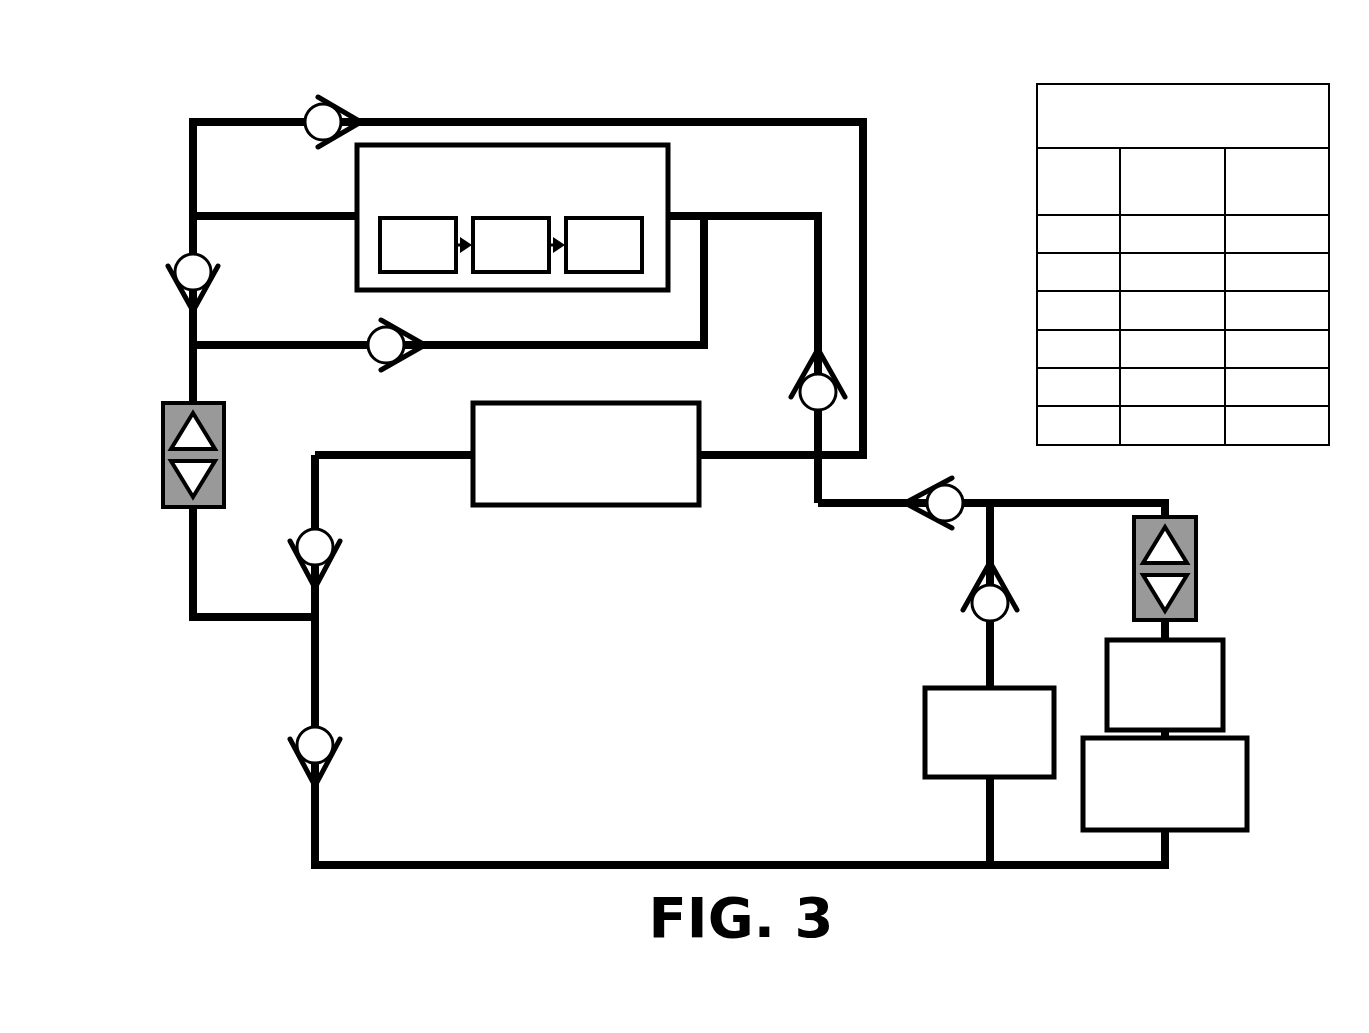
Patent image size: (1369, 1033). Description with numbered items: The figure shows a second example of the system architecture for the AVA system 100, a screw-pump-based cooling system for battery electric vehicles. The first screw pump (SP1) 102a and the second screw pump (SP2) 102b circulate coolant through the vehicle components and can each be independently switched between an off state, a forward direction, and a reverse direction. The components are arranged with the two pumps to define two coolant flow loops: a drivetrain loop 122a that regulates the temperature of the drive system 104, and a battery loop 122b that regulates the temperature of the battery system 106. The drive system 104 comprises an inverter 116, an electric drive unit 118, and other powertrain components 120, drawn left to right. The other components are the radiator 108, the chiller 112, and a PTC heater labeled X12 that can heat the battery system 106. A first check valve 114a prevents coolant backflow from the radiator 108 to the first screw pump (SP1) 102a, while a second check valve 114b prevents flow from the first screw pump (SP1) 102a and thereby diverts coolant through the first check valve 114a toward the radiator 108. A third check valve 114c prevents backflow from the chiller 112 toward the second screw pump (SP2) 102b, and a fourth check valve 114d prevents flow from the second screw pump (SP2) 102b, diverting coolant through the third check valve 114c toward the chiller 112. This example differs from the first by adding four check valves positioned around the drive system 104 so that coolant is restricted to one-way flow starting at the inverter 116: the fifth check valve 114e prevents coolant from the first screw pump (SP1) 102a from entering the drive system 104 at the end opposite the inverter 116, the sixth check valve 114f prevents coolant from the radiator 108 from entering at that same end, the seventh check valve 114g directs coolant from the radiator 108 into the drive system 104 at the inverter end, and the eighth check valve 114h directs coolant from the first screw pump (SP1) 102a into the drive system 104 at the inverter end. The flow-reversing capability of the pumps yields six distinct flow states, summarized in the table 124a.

The AVA system 100 is at (941, 68).
The first screw pump (SP1) 102a is at (160, 455).
The second screw pump (SP2) 102b is at (1196, 568).
The drive system 104 is at (512, 217).
The battery system 106 is at (1165, 784).
The radiator 108 is at (586, 454).
The chiller 112 is at (989, 732).
The PTC heater X12 is at (1165, 685).
The first check valve 114a is at (360, 560).
The second check valve 114b is at (360, 758).
The third check valve 114c is at (1034, 591).
The fourth check valve 114d is at (931, 474).
The fifth check valve 114e is at (403, 376).
The sixth check valve 114f is at (778, 383).
The seventh check valve 114g is at (241, 282).
The eighth check valve 114h is at (325, 90).
The inverter 116 is at (418, 245).
The electric drive unit (EDU) 118 is at (511, 245).
The other powertrain components 120 is at (604, 245).
The drivetrain loop 122a is at (896, 160).
The battery loop 122b is at (1283, 518).
The table 124a is at (1183, 264).